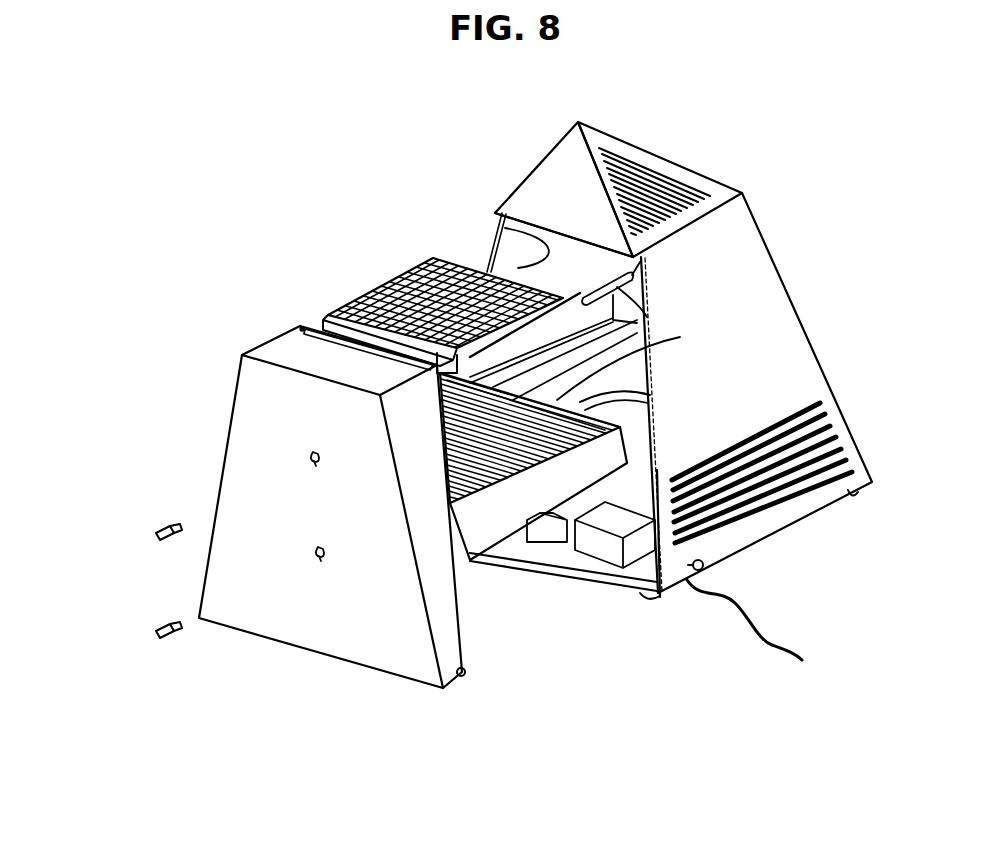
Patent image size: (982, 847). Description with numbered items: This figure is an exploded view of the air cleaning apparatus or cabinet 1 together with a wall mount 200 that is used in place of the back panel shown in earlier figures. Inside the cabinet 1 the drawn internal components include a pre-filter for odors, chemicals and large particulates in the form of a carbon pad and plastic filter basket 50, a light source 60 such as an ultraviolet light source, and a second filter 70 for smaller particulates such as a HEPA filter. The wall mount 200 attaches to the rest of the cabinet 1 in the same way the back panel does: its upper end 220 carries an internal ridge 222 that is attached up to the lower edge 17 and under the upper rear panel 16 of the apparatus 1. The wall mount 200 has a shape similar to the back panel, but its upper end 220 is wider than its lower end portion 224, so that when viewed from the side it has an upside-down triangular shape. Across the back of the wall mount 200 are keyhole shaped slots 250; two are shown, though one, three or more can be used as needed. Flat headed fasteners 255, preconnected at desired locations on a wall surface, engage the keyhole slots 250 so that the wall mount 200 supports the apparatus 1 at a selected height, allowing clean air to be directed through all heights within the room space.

The apparatus/cabinet 1 is at (804, 226).
The upper rear panel 16 is at (556, 182).
The lower edge 17 is at (500, 236).
The carbon pad and plastic filter basket 50 is at (410, 290).
The light source 60 is at (640, 313).
The second filter 70 is at (640, 349).
The wall mount 200 is at (142, 415).
The upper end 220 is at (282, 347).
The internal ridge 222 is at (300, 325).
The lower end portion 224 is at (428, 685).
The keyhole shaped slots 250 is at (320, 560).
The flat headed fasteners 255 is at (318, 555).